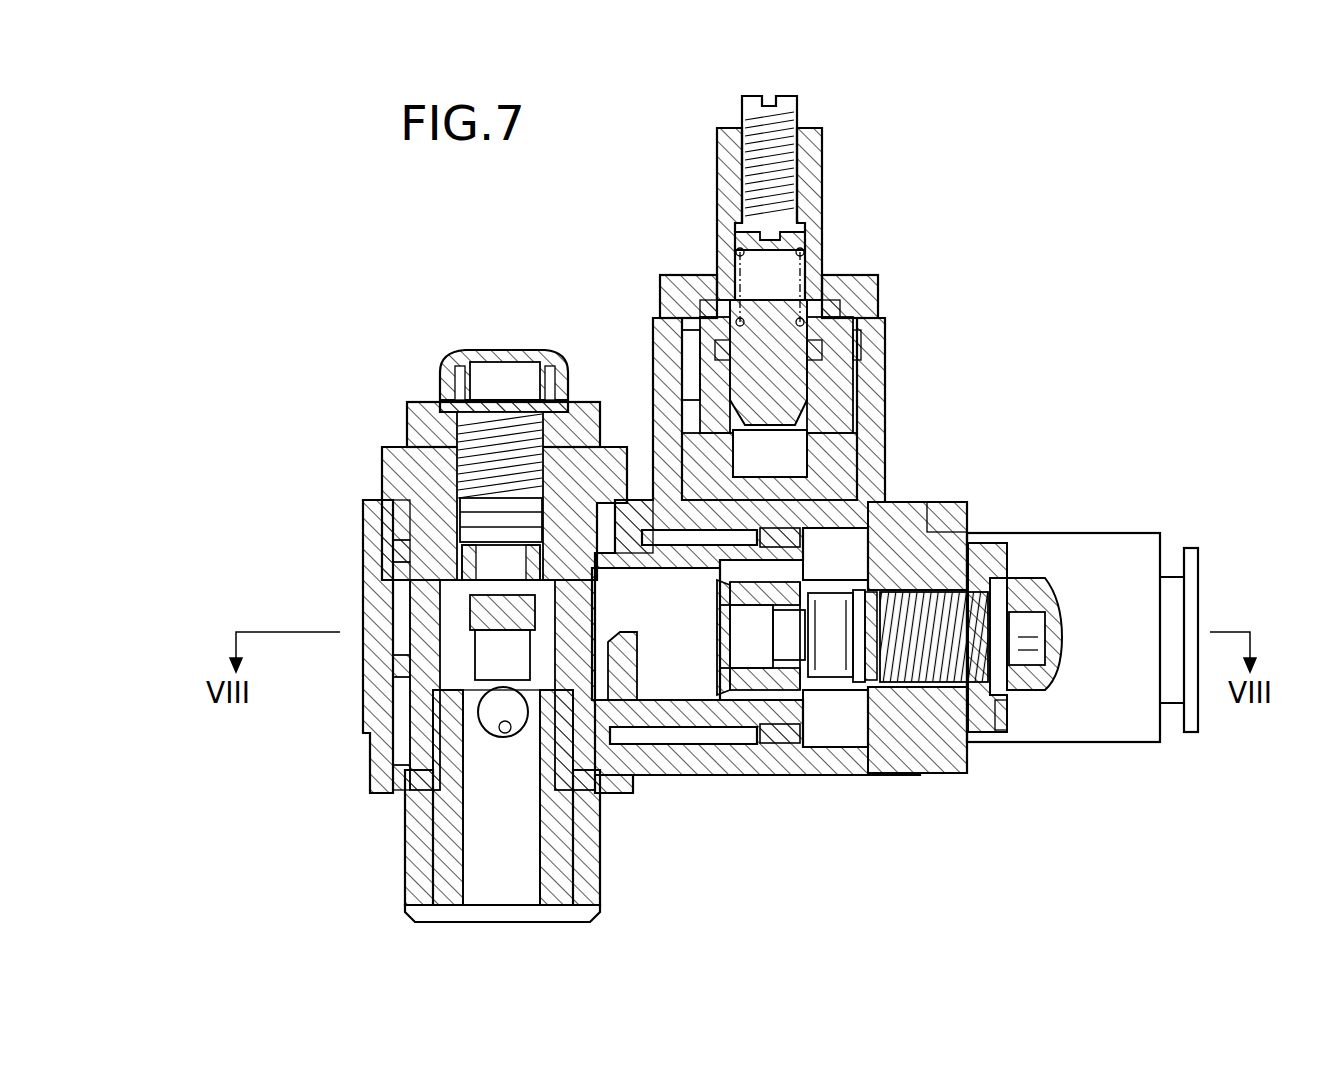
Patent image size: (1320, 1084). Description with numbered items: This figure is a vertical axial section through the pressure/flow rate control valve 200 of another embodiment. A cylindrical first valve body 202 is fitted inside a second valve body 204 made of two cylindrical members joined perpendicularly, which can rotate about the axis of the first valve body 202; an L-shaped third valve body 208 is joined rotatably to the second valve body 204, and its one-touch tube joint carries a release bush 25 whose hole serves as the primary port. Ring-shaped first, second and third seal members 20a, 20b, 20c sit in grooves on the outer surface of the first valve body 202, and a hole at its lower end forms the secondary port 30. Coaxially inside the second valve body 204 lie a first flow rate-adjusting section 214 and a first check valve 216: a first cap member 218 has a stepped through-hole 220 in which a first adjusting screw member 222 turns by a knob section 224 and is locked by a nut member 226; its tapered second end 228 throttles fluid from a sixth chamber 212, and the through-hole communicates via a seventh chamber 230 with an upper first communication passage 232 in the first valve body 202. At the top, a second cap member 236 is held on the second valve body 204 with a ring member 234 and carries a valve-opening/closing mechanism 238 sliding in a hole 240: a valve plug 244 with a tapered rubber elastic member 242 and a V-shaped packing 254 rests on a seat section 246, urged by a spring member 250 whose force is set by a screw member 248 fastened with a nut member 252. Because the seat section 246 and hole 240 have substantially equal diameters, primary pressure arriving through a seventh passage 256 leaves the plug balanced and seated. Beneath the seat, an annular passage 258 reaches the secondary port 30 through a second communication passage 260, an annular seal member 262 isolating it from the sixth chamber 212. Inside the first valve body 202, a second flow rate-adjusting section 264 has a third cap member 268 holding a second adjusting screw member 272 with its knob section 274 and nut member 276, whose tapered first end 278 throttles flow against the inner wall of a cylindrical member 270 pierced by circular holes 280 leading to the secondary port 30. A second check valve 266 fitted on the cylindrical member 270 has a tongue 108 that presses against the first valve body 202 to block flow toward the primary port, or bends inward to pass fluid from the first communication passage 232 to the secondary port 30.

The pressure/flow rate control valve 200 is at (560, 178).
The nut member 252 is at (797, 150).
The screw member 248 is at (790, 185).
The spring member 250 is at (795, 238).
The valve-opening/closing mechanism 238 is at (733, 245).
The ring member 234 is at (810, 285).
The second cap member 236 is at (850, 305).
The valve plug 244 is at (715, 300).
The elastic member 242 is at (810, 340).
The hole 240 is at (838, 345).
The packing 254 is at (860, 345).
The seat section 246 is at (860, 430).
The seventh passage 256 is at (855, 460).
The annular seal member 262 is at (775, 545).
The seventh chamber 230 is at (696, 643).
The annular passage 258 is at (678, 547).
The first communication passage 232 is at (603, 560).
The second communication passage 260 is at (612, 790).
The first check valve 216 is at (735, 710).
The second end 228 is at (790, 700).
The second valve body 204 is at (745, 680).
The sixth chamber 212 is at (866, 530).
The stepped through-hole 220 is at (880, 695).
The first adjusting screw member 222 is at (965, 690).
The first cap member 218 is at (950, 690).
The tongue 108 is at (905, 535).
The first flow rate-adjusting section 214 is at (985, 700).
The nut member 226 is at (1003, 712).
The knob section 224 is at (1060, 640).
The third valve body 208 is at (1078, 560).
The release bush 25 is at (1190, 550).
The knob section 274 is at (503, 352).
The nut member 276 is at (456, 405).
The second flow rate-adjusting section 264 is at (415, 425).
The third cap member 268 is at (400, 470).
The second adjusting screw member 272 is at (495, 450).
The first valve body 202 is at (375, 570).
The first seal member 20a is at (372, 530).
The second check valve 266 is at (398, 612).
The second seal member 20b is at (380, 665).
The third seal member 20c is at (380, 776).
The first end 278 is at (503, 610).
The circular holes 280 is at (505, 735).
The cylindrical member 270 is at (410, 860).
The secondary port 30 is at (555, 885).